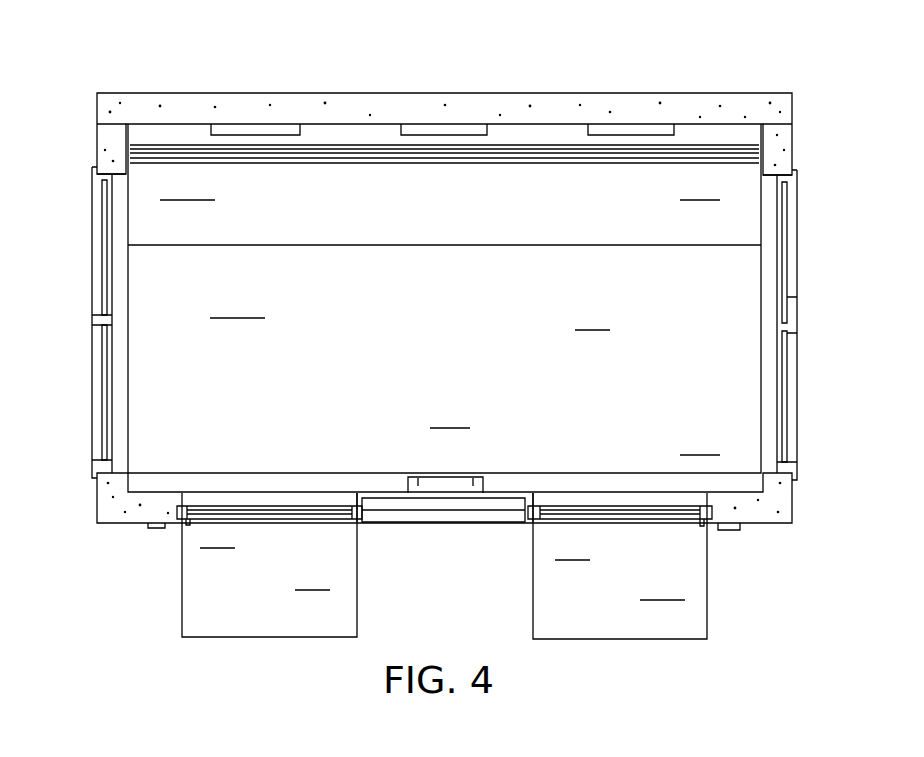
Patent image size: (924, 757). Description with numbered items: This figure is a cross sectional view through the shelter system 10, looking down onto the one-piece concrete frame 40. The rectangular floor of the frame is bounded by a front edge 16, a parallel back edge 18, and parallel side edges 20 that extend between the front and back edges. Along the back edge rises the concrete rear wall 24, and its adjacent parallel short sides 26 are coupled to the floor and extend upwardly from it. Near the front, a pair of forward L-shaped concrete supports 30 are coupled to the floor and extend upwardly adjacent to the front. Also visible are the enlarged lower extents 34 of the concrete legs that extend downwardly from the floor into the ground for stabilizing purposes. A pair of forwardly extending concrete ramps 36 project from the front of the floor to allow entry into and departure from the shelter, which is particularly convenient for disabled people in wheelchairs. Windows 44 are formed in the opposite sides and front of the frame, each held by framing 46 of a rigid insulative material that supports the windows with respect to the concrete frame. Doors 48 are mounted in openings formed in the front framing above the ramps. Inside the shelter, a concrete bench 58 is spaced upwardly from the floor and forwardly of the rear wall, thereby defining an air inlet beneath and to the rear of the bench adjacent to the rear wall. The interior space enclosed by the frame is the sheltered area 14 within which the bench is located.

The system 10 is at (763, 85).
The display tray / bin 14 is at (718, 295).
The front edge 16 is at (398, 525).
The back edge 18 is at (300, 97).
The side edges 20 is at (92, 318).
The concrete rear wall 24 is at (460, 95).
The short sides 26 is at (104, 152).
The forward L-shaped concrete supports 30 is at (108, 508).
The enlarged lower extents 34 is at (585, 0).
The concrete ramps 36 is at (312, 615).
The frame 40 is at (97, 100).
The windows 44 is at (104, 208).
The framing 46 is at (97, 327).
The doors 48 is at (225, 513).
The concrete bench 58 is at (495, 223).